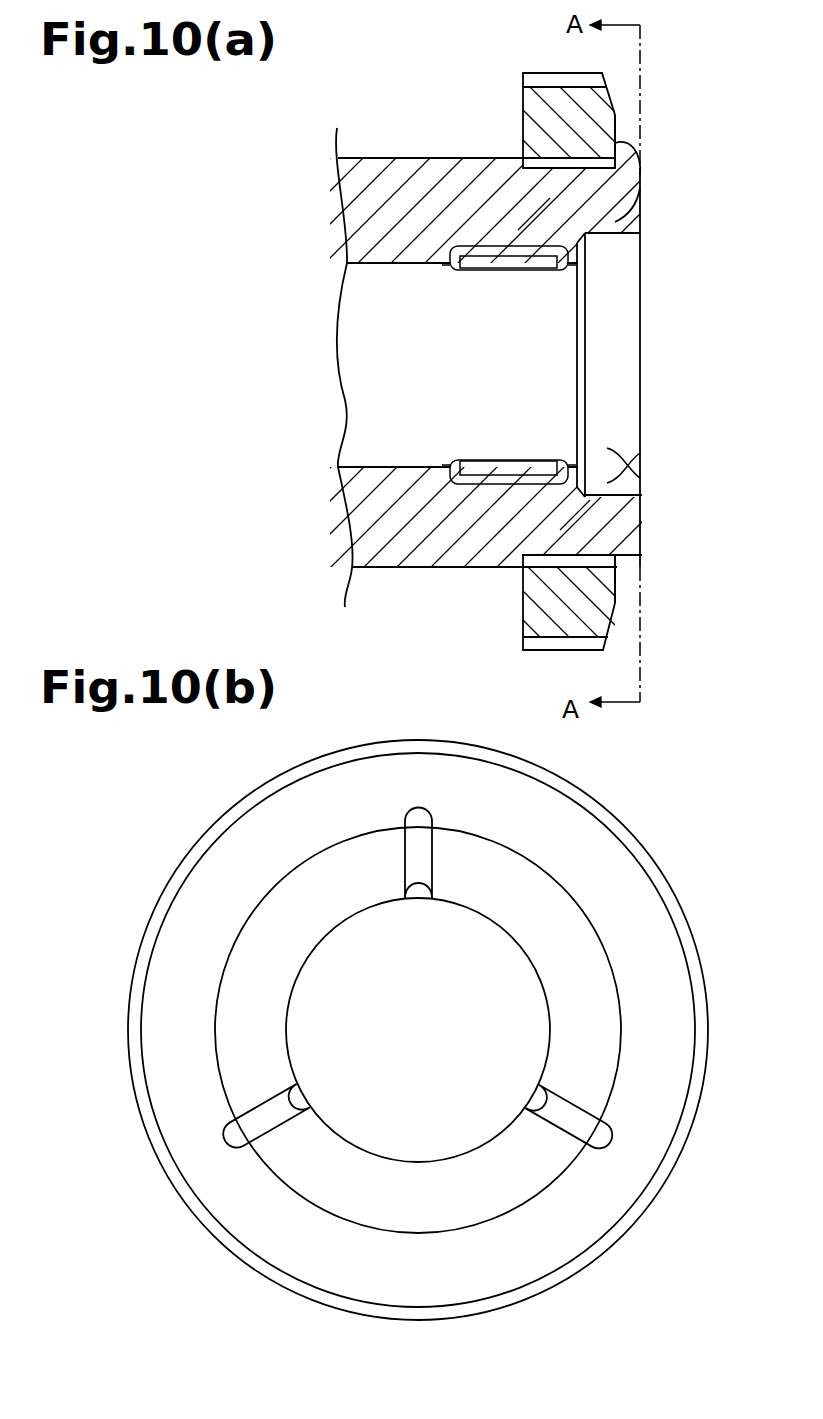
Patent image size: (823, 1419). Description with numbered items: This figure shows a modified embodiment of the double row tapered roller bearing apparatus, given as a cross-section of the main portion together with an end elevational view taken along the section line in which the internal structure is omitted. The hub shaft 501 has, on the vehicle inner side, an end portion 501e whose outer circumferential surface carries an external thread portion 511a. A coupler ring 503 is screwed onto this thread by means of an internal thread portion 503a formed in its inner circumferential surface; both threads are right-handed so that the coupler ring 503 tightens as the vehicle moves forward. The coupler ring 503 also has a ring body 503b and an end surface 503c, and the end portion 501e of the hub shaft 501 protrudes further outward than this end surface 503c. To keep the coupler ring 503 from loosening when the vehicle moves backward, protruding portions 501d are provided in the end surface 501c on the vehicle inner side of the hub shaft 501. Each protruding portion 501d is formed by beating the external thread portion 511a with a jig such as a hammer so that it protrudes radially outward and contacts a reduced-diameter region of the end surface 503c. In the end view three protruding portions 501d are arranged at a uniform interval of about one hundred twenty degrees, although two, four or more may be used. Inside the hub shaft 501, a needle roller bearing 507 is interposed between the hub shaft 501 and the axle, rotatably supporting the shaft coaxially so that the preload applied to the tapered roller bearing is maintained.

In FIG. 10A, the hub shaft 501 is at (403, 148).
In FIG. 10A, the end surface 501c is at (613, 193).
In FIG. 10B, the end surface 501c is at (563, 947).
In FIG. 10A, the protruding portions 501d is at (633, 163).
In FIG. 10B, the protruding portions 501d is at (421, 813).
In FIG. 10A, the end portion 501e is at (603, 230).
In FIG. 10A, the coupler ring 503 is at (479, 55).
In FIG. 10A, the internal thread portion 503a is at (597, 560).
In FIG. 10A, the sealing member body 503b is at (528, 78).
In FIG. 10B, the sealing member body 503b is at (207, 834).
In FIG. 10A, the end surface 503c is at (617, 134).
In FIG. 10B, the end surface 503c is at (216, 905).
In FIG. 10A, the needle roller bearing 507 is at (502, 466).
In FIG. 10A, the external thread portion 511a is at (496, 216).